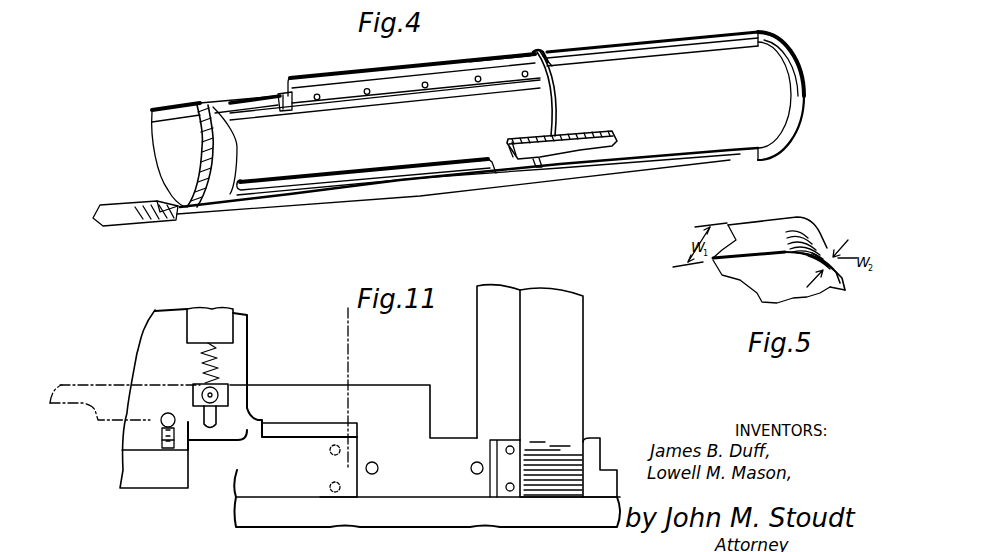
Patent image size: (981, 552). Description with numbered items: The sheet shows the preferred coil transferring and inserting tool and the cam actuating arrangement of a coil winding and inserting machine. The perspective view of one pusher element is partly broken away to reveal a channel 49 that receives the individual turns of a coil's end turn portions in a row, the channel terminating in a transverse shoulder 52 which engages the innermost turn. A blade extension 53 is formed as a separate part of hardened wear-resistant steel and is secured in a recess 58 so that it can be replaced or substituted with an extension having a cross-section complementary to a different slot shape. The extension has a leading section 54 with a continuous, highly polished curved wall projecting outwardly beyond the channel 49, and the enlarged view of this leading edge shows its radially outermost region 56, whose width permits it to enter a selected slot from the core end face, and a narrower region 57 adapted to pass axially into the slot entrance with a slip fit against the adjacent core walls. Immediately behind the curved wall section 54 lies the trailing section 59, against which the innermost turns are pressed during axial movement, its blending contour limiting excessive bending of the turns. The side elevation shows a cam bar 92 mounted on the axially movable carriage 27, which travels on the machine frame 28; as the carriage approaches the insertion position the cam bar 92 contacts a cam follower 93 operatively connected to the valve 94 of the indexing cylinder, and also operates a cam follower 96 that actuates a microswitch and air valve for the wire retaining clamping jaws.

In FIG. 4, the channel 49 is at (645, 82).
In FIG. 4, the transverse shoulder 52 is at (557, 112).
In FIG. 4, the blade extension 53 is at (303, 90).
In FIG. 4, the leading section 54 is at (528, 50).
In FIG. 5, the leading section 54 is at (827, 248).
In FIG. 4, the radially outermost region 56 is at (488, 53).
In FIG. 5, the radially outermost region 56 is at (768, 237).
In FIG. 4, the slot entrance region 57 is at (547, 58).
In FIG. 5, the slot entrance region 57 is at (823, 283).
In FIG. 4, the recess 58 is at (277, 100).
In FIG. 5, the trailing section 59 is at (743, 232).
In FIG. 11, the carriage 27 is at (577, 382).
In FIG. 11, the machine frame 28 is at (247, 510).
In FIG. 11, the cam bar 92 is at (400, 393).
In FIG. 11, the cam follower 93 is at (200, 387).
In FIG. 11, the valve 94 is at (218, 318).
In FIG. 11, the cam follower 96 is at (160, 438).